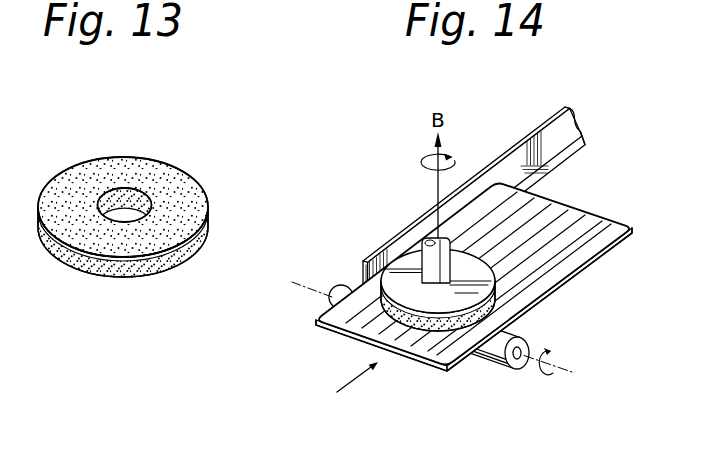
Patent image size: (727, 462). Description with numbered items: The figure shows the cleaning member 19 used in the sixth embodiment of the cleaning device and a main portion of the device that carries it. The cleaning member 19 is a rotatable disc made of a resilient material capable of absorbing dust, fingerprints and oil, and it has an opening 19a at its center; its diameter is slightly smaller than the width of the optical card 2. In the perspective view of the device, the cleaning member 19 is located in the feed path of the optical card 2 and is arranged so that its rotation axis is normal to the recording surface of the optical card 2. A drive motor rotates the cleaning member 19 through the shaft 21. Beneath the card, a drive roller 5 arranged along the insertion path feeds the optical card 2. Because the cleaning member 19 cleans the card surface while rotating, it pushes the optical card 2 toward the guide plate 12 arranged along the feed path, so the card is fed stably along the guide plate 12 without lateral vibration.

In FIG. 13, the cleaning member 19 is at (190, 183).
In FIG. 14, the cleaning member 19 is at (490, 314).
In FIG. 13, the opening 19a is at (125, 196).
In FIG. 14, the guide plate 12 is at (573, 118).
In FIG. 14, the optical card 2 is at (617, 225).
In FIG. 14, the shaft 21 is at (432, 263).
In FIG. 14, the drive roller 5 is at (493, 366).